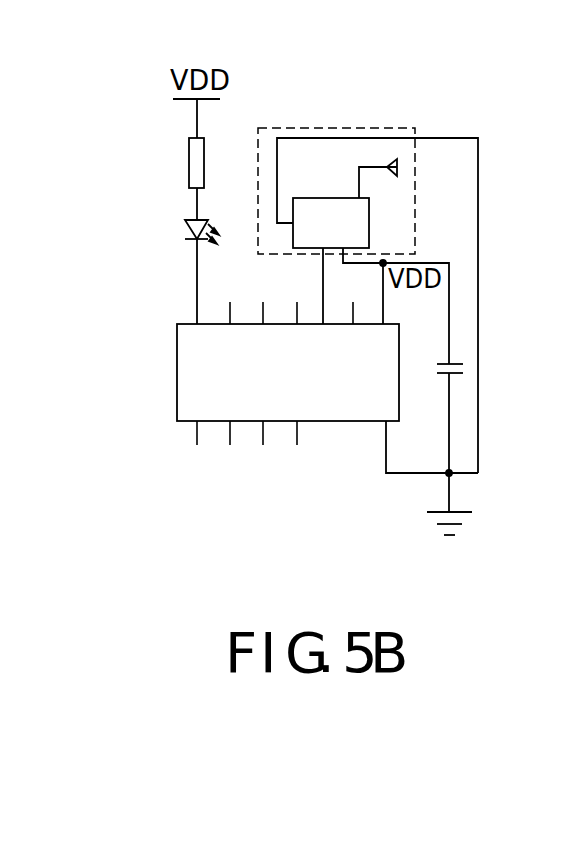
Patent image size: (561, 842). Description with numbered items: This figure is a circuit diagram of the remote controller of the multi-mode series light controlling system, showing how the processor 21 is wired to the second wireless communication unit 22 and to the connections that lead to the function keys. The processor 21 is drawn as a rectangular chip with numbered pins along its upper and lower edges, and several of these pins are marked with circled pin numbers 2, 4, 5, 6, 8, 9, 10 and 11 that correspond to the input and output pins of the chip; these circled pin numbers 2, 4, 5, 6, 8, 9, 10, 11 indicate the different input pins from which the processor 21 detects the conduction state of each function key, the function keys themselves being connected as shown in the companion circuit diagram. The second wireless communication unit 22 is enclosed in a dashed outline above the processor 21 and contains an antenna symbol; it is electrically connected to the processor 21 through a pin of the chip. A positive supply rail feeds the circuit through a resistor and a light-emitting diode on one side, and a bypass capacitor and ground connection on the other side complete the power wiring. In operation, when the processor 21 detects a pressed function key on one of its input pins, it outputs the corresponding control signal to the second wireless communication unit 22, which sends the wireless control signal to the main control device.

The processor 21 is at (177, 375).
The second wireless communication unit 22 is at (373, 127).
The pin 2 of control chip 2 is at (353, 316).
The pin 4 of control chip 4 is at (297, 316).
The pin 5 of control chip 5 is at (263, 316).
The pin 6 of control chip 6 is at (230, 316).
The pin 8 of control chip 8 is at (197, 434).
The pin 9 of control chip 9 is at (230, 434).
The pin 10 of control chip 10 is at (263, 434).
The pin 11 of control chip 11 is at (297, 434).